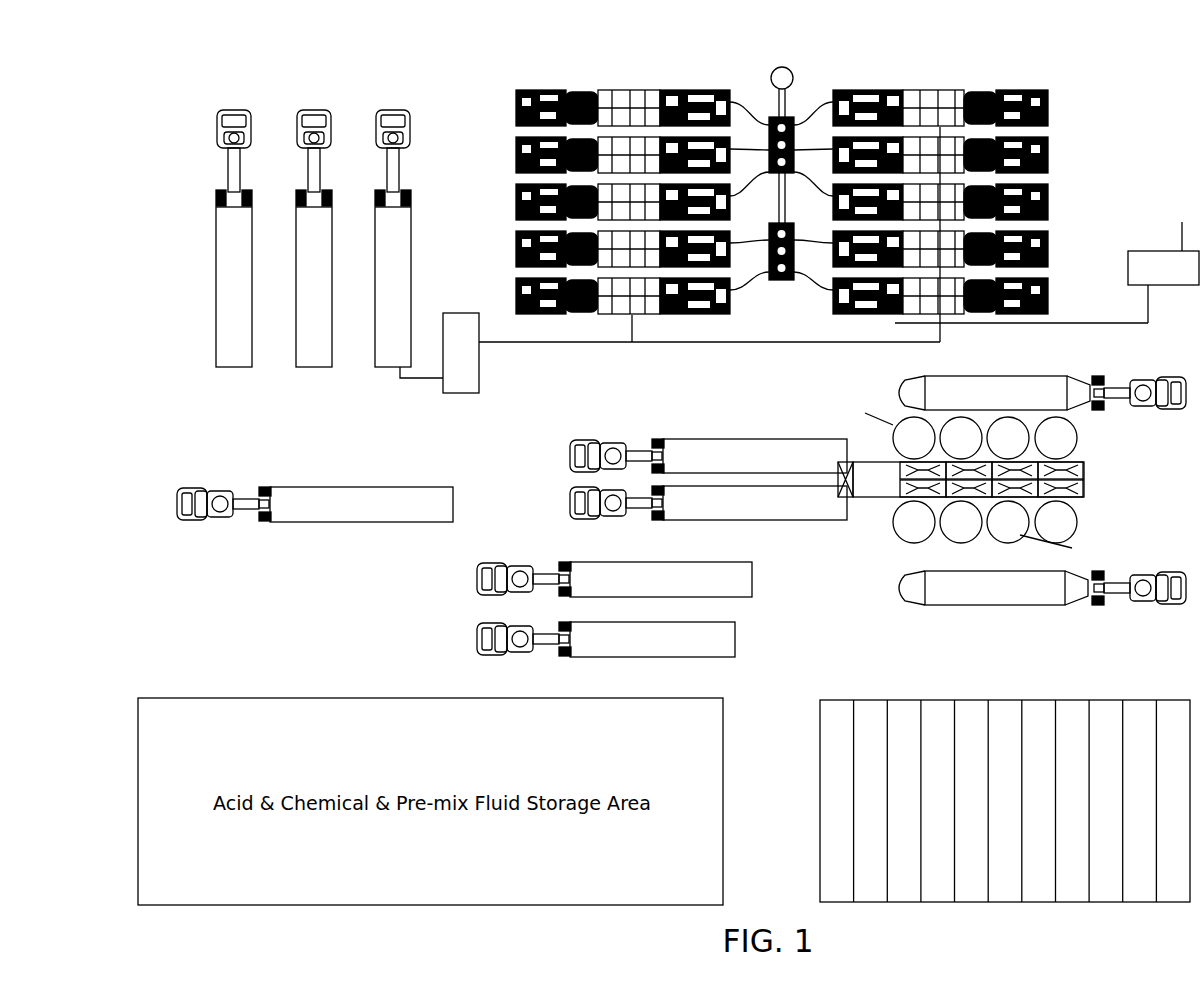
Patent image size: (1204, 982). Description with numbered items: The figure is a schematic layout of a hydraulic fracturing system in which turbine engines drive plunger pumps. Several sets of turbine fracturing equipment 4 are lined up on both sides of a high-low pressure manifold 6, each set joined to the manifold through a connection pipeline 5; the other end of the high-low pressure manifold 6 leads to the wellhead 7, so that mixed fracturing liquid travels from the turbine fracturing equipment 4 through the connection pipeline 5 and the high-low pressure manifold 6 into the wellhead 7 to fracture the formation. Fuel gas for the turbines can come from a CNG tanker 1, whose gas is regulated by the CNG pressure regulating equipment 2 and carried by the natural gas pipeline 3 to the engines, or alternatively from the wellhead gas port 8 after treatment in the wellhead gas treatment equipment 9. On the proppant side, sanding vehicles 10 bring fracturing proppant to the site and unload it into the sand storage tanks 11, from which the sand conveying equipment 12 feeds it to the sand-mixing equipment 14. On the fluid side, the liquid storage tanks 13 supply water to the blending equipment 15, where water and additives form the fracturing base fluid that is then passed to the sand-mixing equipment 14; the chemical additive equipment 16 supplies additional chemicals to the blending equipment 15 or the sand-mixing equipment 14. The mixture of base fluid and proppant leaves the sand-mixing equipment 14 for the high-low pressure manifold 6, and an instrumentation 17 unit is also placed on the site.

The CNG tanker 1 is at (260, 220).
The CNG pressure regulating equipment 2 is at (408, 297).
The natural gas pipeline 3 is at (458, 322).
The turbine fracturing equipment 4 is at (575, 80).
The connection pipeline 5 is at (702, 88).
The high-low pressure manifold 6 is at (727, 90).
The wellhead 7 is at (740, 58).
The wellhead gas port 8 is at (1180, 222).
The wellhead gas treatment equipment 9 is at (1165, 243).
The sanding vehicle 10 is at (1092, 410).
The sand storage tank 11 is at (1076, 445).
The sand conveying equipment 12 is at (1083, 485).
The liquid storage tank 13 is at (925, 720).
The sand-mixing equipment 14 is at (795, 532).
The blending equipment 15 is at (743, 597).
The chemical additive equipment 16 is at (735, 640).
The instrumentation 17 is at (342, 522).